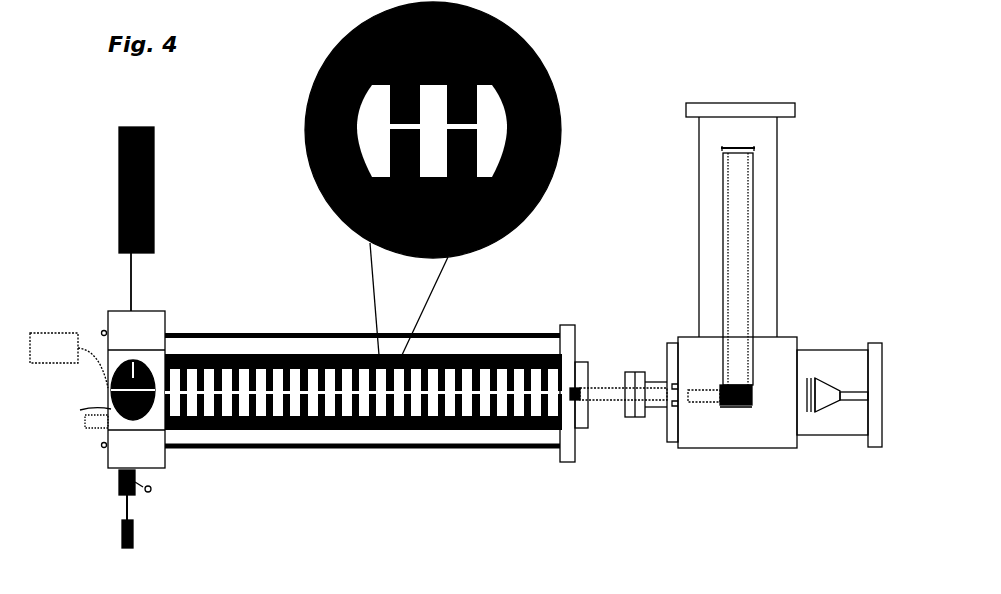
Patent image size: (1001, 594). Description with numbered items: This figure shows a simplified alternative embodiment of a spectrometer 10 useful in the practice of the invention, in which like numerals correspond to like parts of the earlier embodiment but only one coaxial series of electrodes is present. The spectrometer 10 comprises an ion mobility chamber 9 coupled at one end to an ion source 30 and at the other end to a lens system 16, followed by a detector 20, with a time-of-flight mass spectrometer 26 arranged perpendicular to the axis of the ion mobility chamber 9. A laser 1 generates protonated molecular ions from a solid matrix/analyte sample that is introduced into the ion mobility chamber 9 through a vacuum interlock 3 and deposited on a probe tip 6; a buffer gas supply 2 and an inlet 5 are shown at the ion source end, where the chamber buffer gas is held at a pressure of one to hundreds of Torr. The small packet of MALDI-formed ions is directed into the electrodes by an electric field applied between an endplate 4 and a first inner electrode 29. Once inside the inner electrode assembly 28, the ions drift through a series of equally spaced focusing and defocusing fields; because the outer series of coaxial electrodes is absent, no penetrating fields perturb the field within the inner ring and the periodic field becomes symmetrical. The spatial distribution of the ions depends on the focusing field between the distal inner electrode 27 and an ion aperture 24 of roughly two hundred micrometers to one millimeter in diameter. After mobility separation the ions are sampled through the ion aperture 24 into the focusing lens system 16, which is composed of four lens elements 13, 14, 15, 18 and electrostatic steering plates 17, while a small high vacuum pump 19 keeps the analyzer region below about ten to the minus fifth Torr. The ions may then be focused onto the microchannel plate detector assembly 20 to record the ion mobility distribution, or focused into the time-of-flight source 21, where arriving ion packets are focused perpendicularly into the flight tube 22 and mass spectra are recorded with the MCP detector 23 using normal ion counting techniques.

The laser 1 is at (116, 210).
The buffer gas supply 2 is at (69, 352).
The vacuum interlock 3 is at (114, 543).
The endplate 4 is at (112, 386).
The inlet 5 is at (85, 420).
The probe tip 6 is at (87, 414).
The ion mobility chamber 9 is at (363, 421).
The spectrometer 10 is at (566, 86).
The lens element 13 is at (579, 386).
The lens element 14 is at (604, 407).
The lens element 15 is at (646, 385).
The lens system 16 is at (634, 430).
The electrostatic steering plates 17 is at (684, 385).
The lens element 18 is at (706, 406).
The high vacuum pump 19 is at (732, 410).
The microchannel plate detector assembly 20 is at (822, 404).
The time-of-flight source 21 is at (753, 396).
The flight tube 22 is at (754, 248).
The MCP detector 23 is at (755, 155).
The ion aperture 24 is at (562, 410).
The time-of-flight mass spectrometer 26 is at (690, 240).
The distal inner electrode 27 is at (547, 436).
The inner electrode assembly 28 is at (355, 457).
The first inner electrode 29 is at (180, 436).
The ion source 30 is at (160, 296).